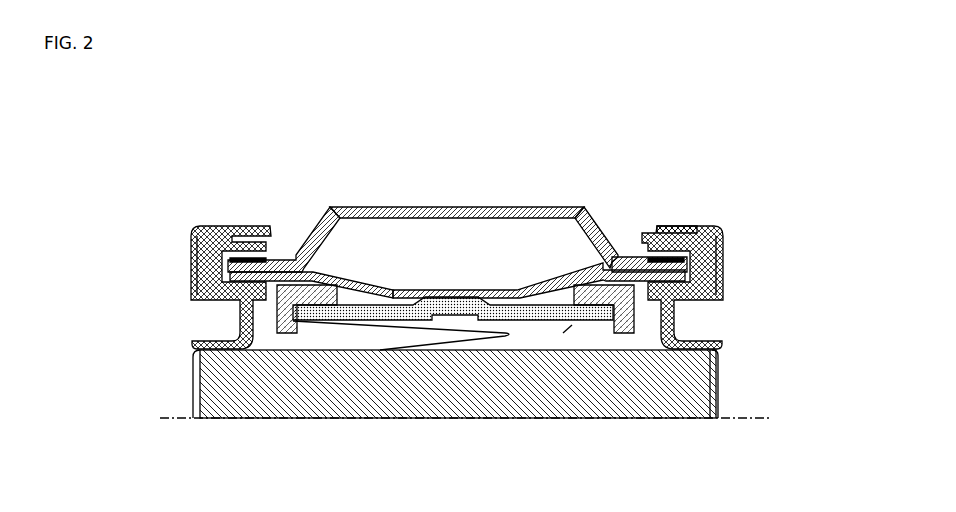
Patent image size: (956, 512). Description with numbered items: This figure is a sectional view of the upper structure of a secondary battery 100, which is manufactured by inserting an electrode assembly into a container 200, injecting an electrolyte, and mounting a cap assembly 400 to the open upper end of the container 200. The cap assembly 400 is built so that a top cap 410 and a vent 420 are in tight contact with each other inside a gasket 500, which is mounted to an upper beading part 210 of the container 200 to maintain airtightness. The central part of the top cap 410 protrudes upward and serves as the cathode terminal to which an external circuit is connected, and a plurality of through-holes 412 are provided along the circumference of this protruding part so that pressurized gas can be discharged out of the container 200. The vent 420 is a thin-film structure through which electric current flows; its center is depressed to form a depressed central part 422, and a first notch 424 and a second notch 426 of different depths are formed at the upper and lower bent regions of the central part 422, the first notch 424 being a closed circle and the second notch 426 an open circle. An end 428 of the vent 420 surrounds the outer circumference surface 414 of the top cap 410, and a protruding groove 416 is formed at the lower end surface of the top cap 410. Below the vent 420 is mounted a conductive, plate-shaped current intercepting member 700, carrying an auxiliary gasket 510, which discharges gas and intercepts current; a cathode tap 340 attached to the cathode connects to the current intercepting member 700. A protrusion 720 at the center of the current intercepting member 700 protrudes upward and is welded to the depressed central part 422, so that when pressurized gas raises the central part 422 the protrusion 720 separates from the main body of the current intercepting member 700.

The battery 100 is at (172, 184).
The container 200 is at (717, 416).
The upper beading part 210 is at (190, 322).
The cathode tap 340 is at (462, 322).
The cap assembly 400 is at (177, 229).
The top cap 410 is at (490, 207).
The through-holes 412 is at (582, 207).
The outer circumference surface 414 is at (727, 258).
The protruding groove 416 is at (723, 297).
The vent 420 is at (308, 223).
The depressed central part 422 is at (447, 288).
The first notch 424 is at (613, 250).
The second notch 426 is at (393, 292).
The end of the vent 428 is at (683, 232).
The gasket 500 is at (260, 224).
The auxiliary gasket 510 is at (287, 333).
The current intercepting member 700 is at (372, 328).
The protrusion 720 is at (482, 336).